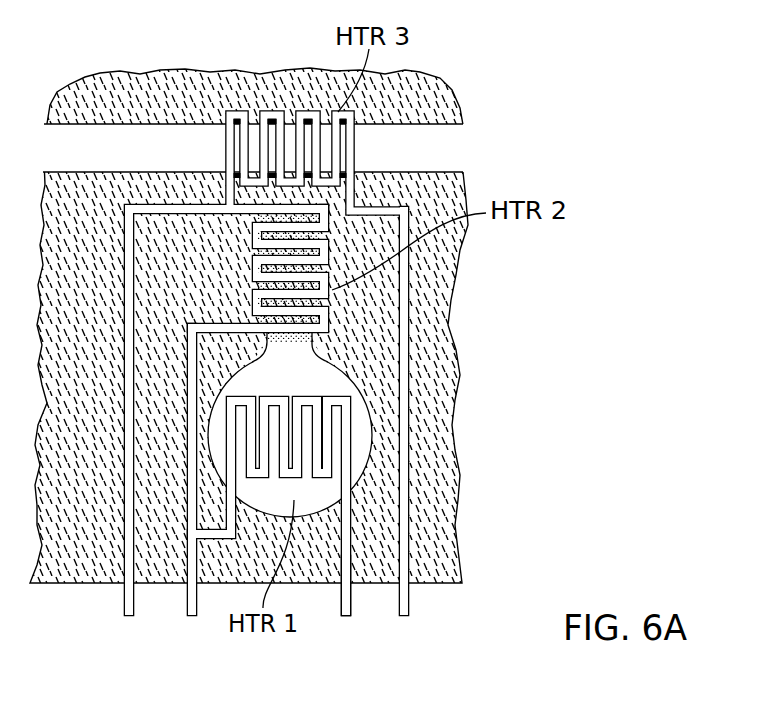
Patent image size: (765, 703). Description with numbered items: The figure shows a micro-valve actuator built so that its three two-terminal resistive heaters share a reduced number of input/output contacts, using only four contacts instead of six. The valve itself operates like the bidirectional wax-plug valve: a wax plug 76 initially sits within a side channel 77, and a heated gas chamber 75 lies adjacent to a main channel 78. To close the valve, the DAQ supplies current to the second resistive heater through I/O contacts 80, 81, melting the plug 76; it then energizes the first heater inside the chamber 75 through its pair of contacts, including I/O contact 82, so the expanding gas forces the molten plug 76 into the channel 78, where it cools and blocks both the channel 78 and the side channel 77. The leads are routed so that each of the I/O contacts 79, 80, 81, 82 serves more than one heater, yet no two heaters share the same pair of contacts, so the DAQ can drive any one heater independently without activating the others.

The chamber 75 is at (371, 429).
The wax plug 76 is at (288, 345).
The side channel 77 is at (300, 348).
The channel 78 is at (454, 148).
The I/O contact 79 is at (125, 618).
The I/O contact 80 is at (190, 619).
The I/O contact 81 is at (343, 619).
The I/O contact 82 is at (403, 619).